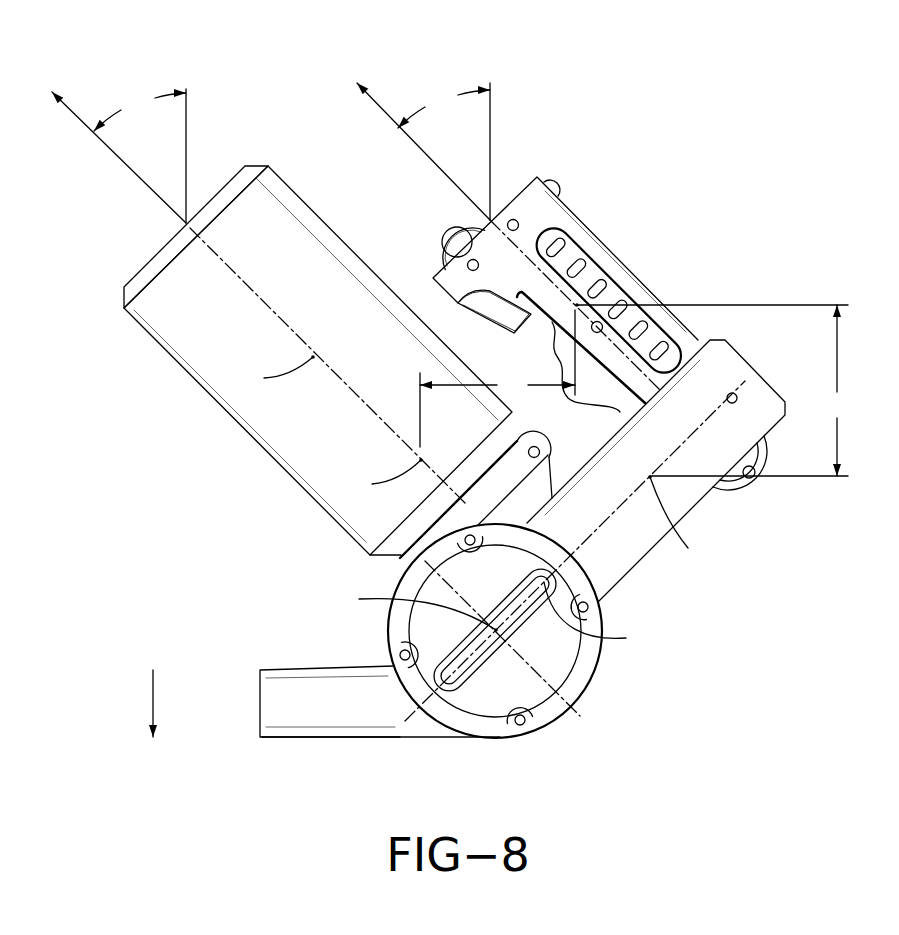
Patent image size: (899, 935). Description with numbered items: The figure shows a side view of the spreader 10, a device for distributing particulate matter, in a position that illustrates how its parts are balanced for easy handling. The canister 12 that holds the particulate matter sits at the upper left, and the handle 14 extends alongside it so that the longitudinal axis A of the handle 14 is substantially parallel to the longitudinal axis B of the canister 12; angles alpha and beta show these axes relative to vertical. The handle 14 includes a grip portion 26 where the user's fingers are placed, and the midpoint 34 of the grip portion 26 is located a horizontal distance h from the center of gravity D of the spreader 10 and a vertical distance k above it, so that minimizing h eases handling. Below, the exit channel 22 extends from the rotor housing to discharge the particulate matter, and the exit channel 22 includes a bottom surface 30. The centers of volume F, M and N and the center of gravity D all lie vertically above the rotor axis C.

The spreader 10 is at (712, 108).
The canister 12 is at (189, 343).
The handle 14 is at (577, 249).
The exit channel 22 is at (322, 668).
The grip portion 26 is at (553, 322).
The bottom surface 30 is at (348, 738).
The midpoint of the grip portion 34 is at (580, 294).